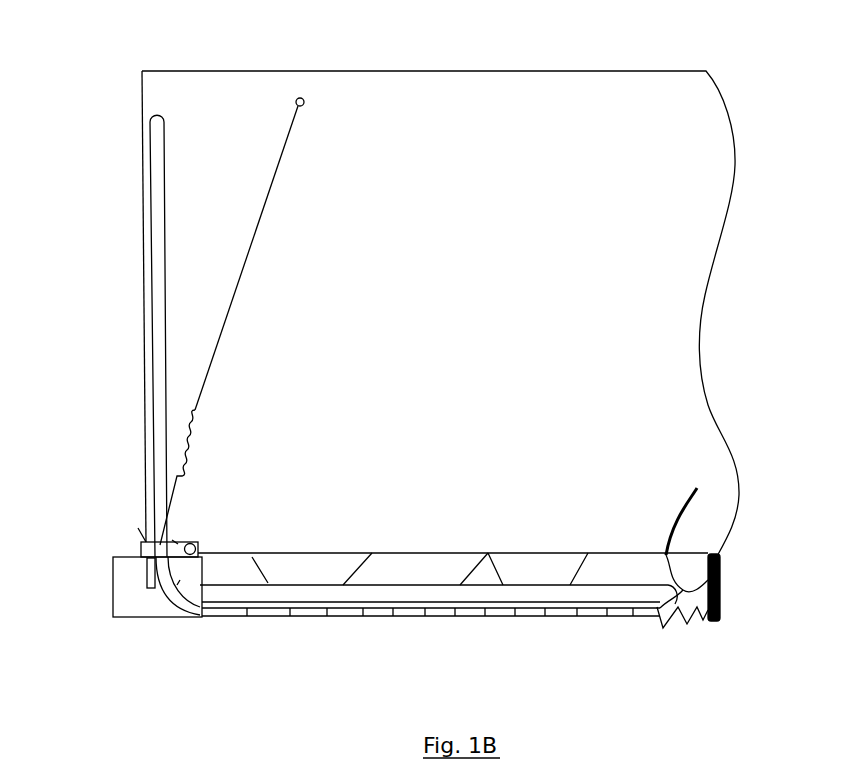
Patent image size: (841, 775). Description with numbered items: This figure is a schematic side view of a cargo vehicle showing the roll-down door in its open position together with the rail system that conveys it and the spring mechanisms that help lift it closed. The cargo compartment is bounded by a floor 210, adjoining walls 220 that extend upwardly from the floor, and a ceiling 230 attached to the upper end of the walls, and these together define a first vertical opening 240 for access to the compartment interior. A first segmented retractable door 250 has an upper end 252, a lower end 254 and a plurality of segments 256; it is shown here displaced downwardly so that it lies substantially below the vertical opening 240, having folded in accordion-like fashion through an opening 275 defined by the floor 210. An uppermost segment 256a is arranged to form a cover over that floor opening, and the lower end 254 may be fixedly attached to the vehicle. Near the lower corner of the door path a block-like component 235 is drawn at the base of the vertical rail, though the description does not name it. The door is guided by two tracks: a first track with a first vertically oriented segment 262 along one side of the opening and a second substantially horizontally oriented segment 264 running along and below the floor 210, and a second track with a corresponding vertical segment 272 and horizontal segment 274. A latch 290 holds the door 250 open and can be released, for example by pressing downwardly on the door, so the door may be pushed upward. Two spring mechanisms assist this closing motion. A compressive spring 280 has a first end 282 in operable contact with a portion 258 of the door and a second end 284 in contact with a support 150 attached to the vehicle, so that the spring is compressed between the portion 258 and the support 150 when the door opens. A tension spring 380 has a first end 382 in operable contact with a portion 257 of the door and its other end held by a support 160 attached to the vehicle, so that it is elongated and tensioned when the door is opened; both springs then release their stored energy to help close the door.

The support 150 is at (721, 578).
The support 160 is at (304, 103).
The floor 210 is at (693, 510).
The adjoining walls 220 is at (141, 98).
The ceiling 230 is at (482, 71).
The base block 235 is at (113, 578).
The first vertical opening 240 is at (118, 346).
The first segmented retractable door 250 is at (412, 628).
The upper end 252 is at (142, 550).
The lower end 254 is at (732, 631).
The segments 256 is at (316, 650).
The uppermost segment 256a is at (150, 580).
The portion of the first segmented retractable door 257 is at (172, 540).
The portion of the first segmented retractable door 258 is at (703, 627).
The first vertically oriented segment 262 is at (240, 365).
The second substantially horizontally oriented segment 264 is at (553, 528).
The first vertically oriented segment 272 is at (165, 232).
The second substantially horizontally oriented segment 274 is at (488, 553).
The opening 275 is at (138, 528).
The compressive spring 280 is at (754, 590).
The first end of the compressive spring 282 is at (695, 548).
The second end of the compressive spring 284 is at (732, 631).
The latch 290 is at (185, 540).
The tension spring 380 is at (203, 398).
The first end of the tension spring 382 is at (240, 490).